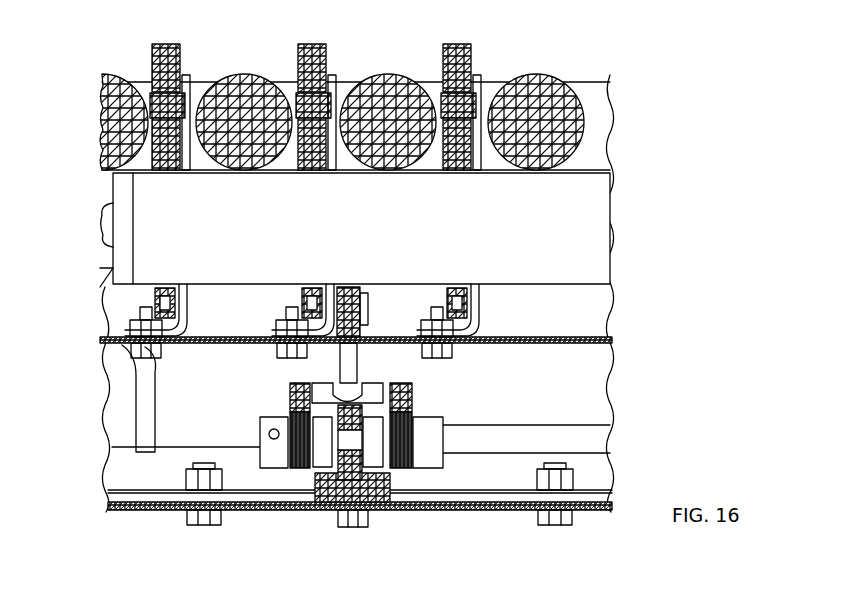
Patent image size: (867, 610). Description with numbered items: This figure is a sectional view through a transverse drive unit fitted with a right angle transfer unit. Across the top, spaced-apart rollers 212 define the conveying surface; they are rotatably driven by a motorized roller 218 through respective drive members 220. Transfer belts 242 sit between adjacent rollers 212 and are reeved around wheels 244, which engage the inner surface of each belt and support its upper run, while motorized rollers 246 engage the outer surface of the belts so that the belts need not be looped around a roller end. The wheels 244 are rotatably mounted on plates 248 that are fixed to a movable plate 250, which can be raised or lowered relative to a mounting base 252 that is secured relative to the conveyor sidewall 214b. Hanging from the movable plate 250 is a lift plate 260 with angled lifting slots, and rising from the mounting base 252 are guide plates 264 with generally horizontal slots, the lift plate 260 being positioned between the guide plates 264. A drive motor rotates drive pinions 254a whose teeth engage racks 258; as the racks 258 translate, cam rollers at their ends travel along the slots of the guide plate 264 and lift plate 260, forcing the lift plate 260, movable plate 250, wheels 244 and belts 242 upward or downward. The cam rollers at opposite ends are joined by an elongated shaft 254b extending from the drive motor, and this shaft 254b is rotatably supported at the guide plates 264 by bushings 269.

The rollers 212 is at (248, 72).
The transfer belts 242 is at (310, 47).
The wheels or pulleys 244 is at (462, 62).
The conveyor sidewall 214b is at (600, 146).
The motorized rollers 246 is at (606, 206).
The plates 248 is at (485, 302).
The movable plate 250 is at (600, 332).
The lift plate 260 is at (346, 308).
The guide plate 264 is at (320, 390).
The racks or tracks 258 is at (302, 392).
The drive members 220 is at (143, 394).
The motorized roller 218 is at (123, 423).
The elongated shaft 254b is at (608, 430).
The mounting base 252 is at (138, 513).
The drive pinions 254a is at (298, 462).
The bearings or bushings 269 is at (347, 473).